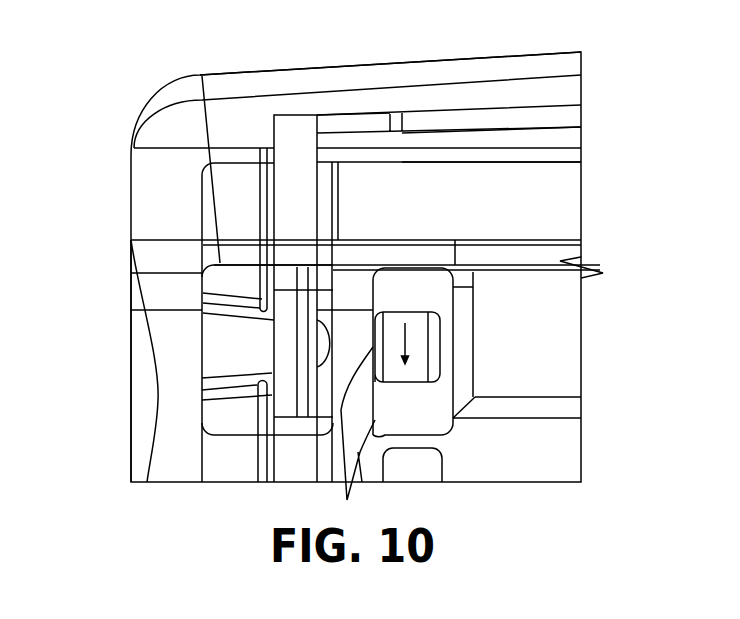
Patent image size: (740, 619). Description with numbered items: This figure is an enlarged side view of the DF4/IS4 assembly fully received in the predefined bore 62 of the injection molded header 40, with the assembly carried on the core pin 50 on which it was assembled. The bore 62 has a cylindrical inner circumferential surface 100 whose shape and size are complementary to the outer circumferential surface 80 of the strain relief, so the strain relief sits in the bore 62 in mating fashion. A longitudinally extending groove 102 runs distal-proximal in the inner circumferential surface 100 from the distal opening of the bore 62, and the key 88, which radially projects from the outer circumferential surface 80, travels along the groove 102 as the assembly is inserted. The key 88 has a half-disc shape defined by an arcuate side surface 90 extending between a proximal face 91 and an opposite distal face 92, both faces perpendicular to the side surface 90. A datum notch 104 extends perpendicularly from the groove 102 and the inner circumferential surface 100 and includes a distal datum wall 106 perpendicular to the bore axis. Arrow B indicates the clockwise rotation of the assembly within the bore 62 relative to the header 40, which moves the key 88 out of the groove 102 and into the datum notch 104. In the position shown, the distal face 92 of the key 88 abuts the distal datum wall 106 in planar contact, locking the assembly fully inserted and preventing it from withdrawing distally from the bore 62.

The injection molded header 40 is at (183, 90).
The inner circumferential surface 100 is at (168, 146).
The longitudinally extending groove 102 is at (150, 240).
The outer circumferential surface 80 is at (403, 178).
The predefined bore 62 is at (551, 141).
The core pin 50 is at (556, 178).
The datum notch 104 is at (432, 260).
The key 88 is at (405, 307).
The side surface 90 is at (397, 325).
The arrow B is at (413, 350).
The proximal face 91 is at (442, 372).
The distal datum wall 106 is at (375, 402).
The distal face 92 is at (338, 418).